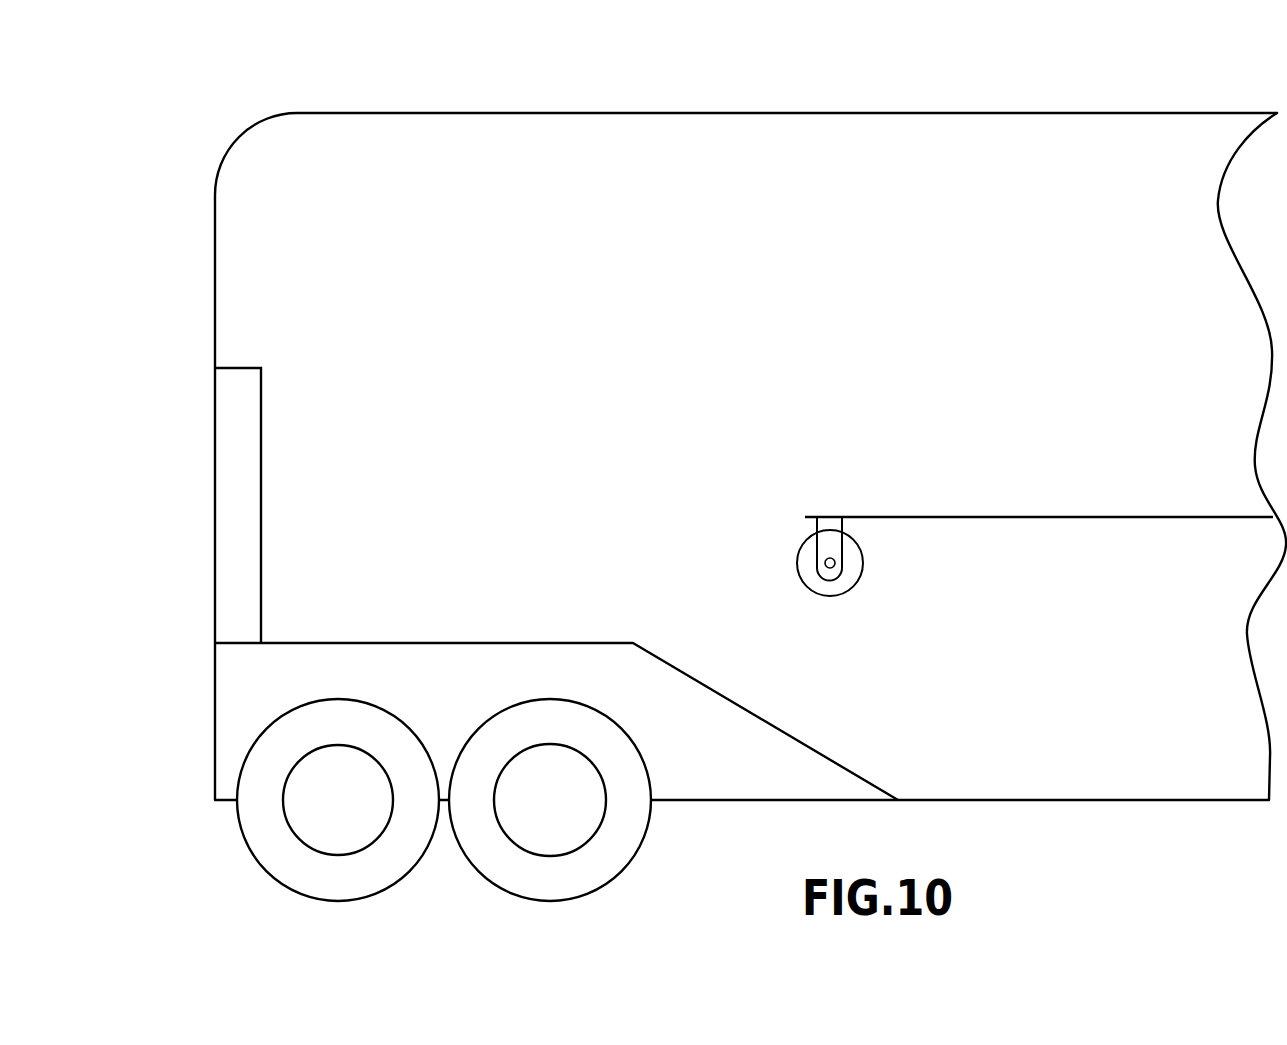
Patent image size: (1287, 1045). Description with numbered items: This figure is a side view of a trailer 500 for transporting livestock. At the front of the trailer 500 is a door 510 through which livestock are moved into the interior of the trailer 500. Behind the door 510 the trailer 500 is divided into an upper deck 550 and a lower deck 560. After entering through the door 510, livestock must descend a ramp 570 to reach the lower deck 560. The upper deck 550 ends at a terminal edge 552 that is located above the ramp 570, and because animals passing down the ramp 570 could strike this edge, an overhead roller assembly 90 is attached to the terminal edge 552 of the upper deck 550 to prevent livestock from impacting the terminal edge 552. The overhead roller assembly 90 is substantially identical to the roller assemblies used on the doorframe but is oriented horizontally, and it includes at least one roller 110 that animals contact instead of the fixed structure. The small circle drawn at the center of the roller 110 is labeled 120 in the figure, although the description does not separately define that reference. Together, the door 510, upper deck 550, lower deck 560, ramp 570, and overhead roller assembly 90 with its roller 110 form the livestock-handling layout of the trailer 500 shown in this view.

The trailer 500 is at (408, 66).
The door 510 is at (261, 368).
The upper deck 550 is at (1023, 517).
The terminal edge 552 is at (805, 517).
The lower deck 560 is at (1090, 800).
The ramp 570 is at (767, 725).
The overhead roller assembly 90 is at (836, 549).
The roller 110 is at (803, 580).
The axle 120 is at (835, 565).